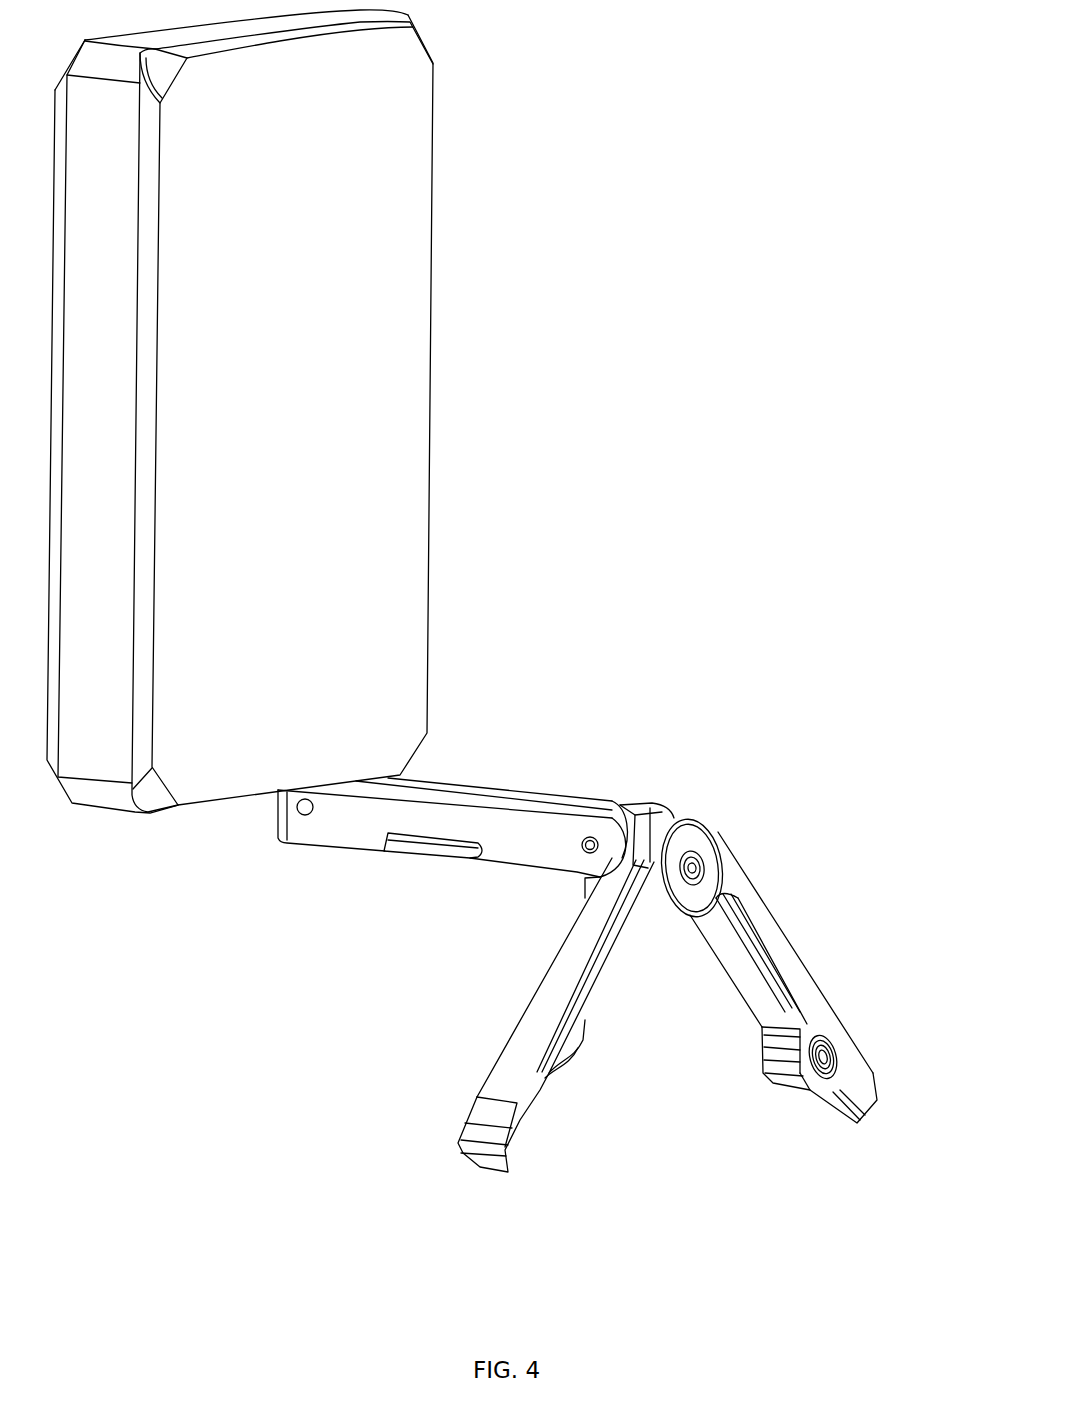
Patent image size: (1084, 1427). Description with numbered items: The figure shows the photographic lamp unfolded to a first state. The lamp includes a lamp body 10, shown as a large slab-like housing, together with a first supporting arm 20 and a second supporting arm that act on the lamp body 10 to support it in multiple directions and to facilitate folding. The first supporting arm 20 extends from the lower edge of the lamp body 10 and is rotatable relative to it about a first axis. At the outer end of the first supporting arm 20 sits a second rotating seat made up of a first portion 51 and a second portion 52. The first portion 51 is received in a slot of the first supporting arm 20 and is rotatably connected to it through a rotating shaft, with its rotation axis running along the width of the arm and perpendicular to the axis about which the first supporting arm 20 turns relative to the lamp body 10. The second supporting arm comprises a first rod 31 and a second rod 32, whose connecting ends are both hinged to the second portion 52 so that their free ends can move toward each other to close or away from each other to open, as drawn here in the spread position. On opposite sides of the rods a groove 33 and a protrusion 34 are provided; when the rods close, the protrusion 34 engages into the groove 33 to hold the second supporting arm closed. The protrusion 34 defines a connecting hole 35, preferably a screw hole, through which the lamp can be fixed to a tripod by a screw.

The lamp body 10 is at (370, 405).
The first supporting arm 20 is at (510, 790).
The first portion 51 is at (630, 803).
The second portion 52 is at (700, 870).
The first rod 31 is at (762, 932).
The second rod 32 is at (580, 1015).
The groove 33 is at (547, 1090).
The protrusion 34 is at (789, 1078).
The connecting hole 35 is at (840, 1053).